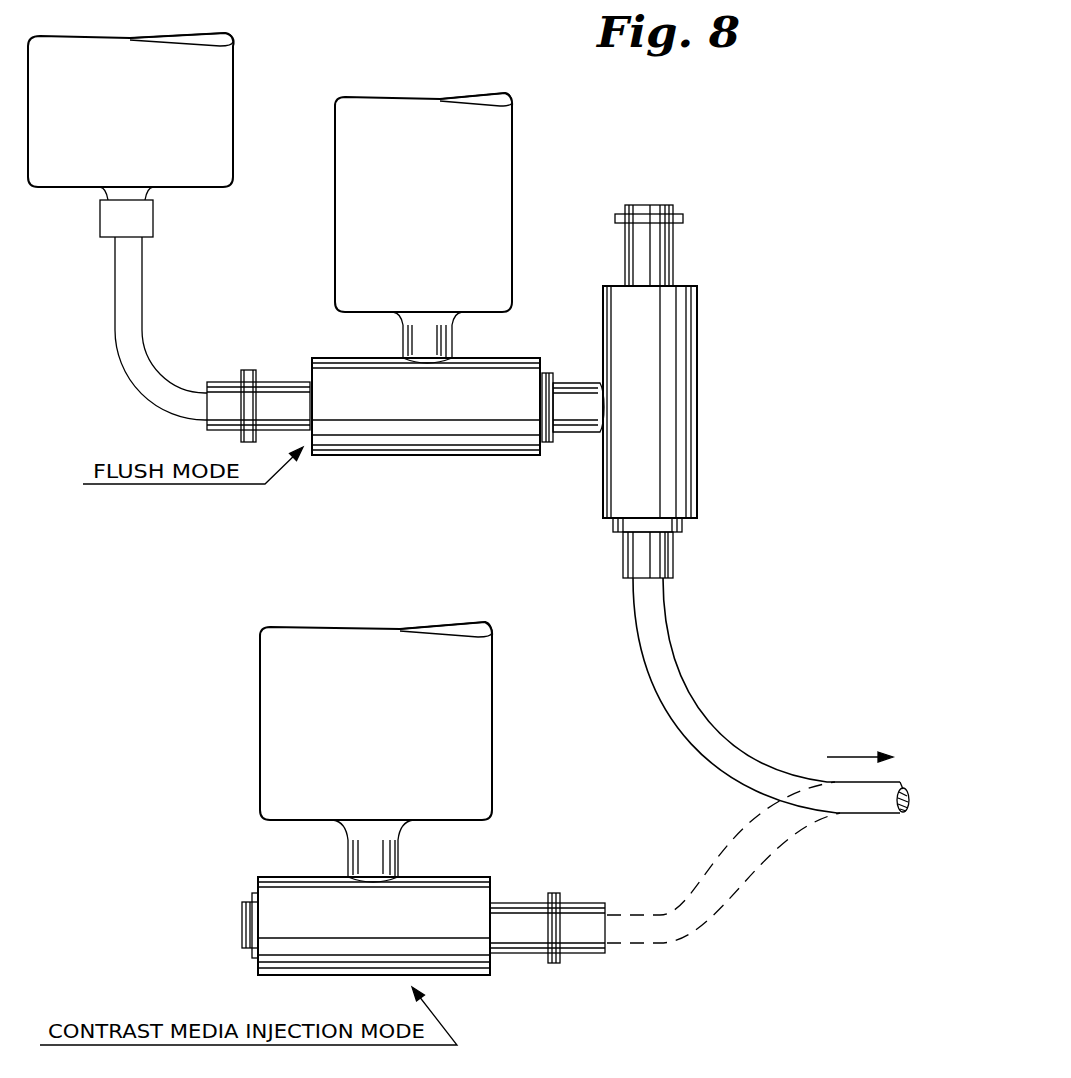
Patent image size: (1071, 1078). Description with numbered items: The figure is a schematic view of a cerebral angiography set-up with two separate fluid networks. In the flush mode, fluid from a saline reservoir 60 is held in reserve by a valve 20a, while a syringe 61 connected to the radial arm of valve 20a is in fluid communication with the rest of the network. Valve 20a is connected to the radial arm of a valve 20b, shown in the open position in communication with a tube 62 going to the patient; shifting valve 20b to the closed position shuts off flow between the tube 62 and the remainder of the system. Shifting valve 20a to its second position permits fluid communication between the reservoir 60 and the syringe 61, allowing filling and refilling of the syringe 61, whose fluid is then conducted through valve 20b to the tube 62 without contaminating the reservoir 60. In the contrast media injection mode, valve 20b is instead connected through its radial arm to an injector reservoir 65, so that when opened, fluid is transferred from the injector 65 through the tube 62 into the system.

The saline reservoir 60 is at (212, 168).
The syringe 61 is at (493, 298).
The injector reservoir 65 is at (472, 803).
The valve 20a is at (408, 428).
The valve 20b is at (665, 478).
The tube 62 is at (663, 675).